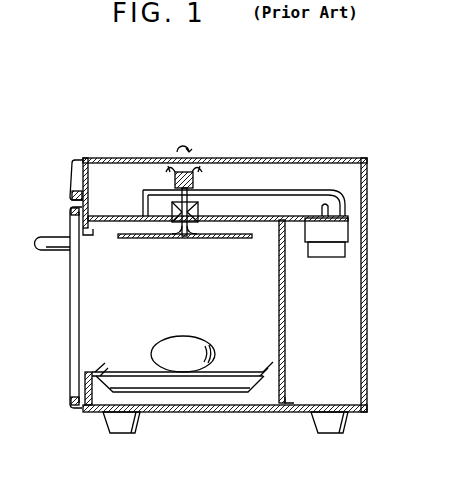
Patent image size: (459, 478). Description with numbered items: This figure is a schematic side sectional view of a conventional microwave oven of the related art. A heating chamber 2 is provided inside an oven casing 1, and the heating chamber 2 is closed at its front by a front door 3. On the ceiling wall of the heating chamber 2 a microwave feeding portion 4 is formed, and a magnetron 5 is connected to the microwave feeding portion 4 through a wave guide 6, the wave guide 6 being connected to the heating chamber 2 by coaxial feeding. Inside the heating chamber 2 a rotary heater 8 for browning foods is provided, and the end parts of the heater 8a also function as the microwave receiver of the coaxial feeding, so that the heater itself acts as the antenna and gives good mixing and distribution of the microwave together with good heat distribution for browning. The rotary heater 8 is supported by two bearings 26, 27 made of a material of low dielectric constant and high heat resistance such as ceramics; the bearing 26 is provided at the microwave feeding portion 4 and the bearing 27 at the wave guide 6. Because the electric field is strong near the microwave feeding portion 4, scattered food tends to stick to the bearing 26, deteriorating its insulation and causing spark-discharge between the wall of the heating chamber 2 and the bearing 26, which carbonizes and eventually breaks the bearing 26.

The oven casing 1 is at (367, 294).
The heating chamber 2 is at (268, 325).
The front door 3 is at (73, 310).
The microwave feeding portion 4 is at (199, 186).
The magnetron 5 is at (341, 230).
The wave guide 6 is at (264, 192).
The rotary heater 8 is at (147, 237).
The end parts of the heater 8a is at (172, 203).
The bearing 26 is at (166, 214).
The bearing 27 is at (174, 175).